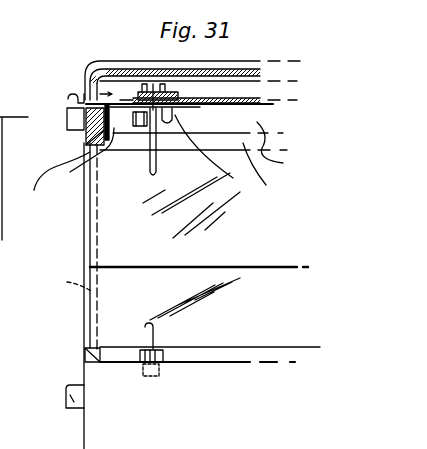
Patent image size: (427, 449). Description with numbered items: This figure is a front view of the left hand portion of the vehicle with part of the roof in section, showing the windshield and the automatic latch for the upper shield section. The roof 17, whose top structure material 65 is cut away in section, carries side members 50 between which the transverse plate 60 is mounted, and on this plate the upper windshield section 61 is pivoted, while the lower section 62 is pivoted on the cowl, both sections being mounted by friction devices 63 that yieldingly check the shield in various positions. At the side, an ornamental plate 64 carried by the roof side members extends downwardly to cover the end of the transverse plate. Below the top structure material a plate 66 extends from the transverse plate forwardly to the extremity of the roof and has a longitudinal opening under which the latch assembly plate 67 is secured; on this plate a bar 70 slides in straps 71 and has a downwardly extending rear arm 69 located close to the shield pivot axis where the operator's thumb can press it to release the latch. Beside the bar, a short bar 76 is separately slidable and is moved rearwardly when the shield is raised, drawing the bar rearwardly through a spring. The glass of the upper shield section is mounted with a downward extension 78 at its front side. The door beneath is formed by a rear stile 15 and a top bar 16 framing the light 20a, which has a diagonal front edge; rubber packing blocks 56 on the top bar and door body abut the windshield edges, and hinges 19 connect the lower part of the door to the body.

The rear stile 15 is at (83, 247).
The top bar 16 is at (85, 136).
The roof 17 is at (261, 67).
The hinges 19 is at (72, 402).
The light 20a is at (66, 276).
The side members of the roof 50 is at (83, 94).
The rubber packing blocks 56 is at (85, 352).
The plate 60 is at (283, 152).
The upper windshield section 61 is at (277, 239).
The lower windshield section 62 is at (283, 318).
The friction devices 63 is at (168, 125).
The ornamental plate 64 is at (79, 157).
The top structure material 65 is at (228, 74).
The plate 66 is at (253, 111).
The latch assembly plate 67 is at (178, 113).
The arm 69 is at (213, 157).
The bar 70 is at (172, 92).
The straps 71 is at (267, 173).
The short bar 76 is at (143, 92).
The downward extension 78 is at (143, 178).